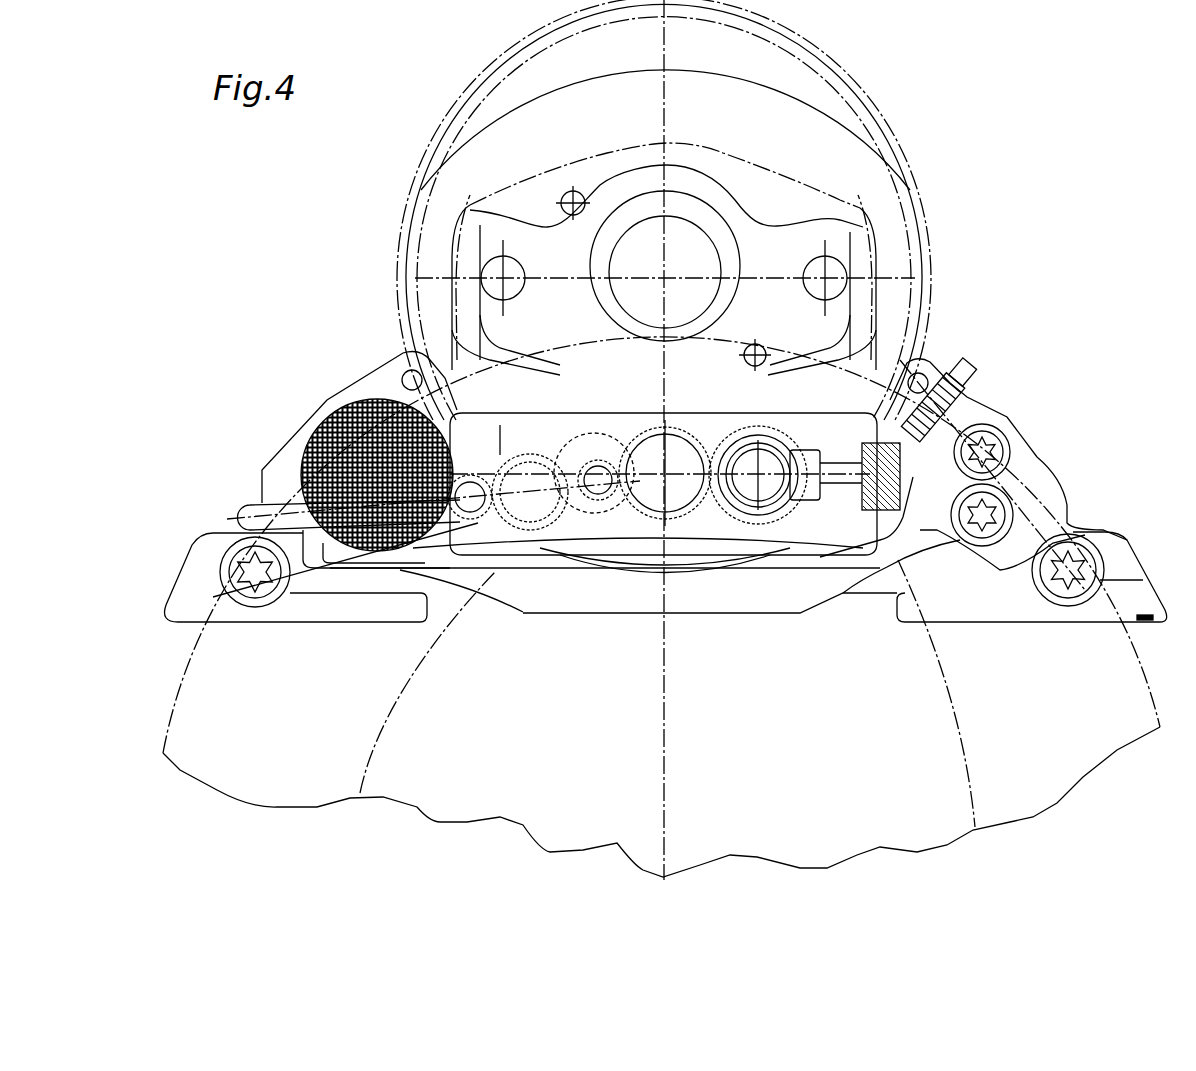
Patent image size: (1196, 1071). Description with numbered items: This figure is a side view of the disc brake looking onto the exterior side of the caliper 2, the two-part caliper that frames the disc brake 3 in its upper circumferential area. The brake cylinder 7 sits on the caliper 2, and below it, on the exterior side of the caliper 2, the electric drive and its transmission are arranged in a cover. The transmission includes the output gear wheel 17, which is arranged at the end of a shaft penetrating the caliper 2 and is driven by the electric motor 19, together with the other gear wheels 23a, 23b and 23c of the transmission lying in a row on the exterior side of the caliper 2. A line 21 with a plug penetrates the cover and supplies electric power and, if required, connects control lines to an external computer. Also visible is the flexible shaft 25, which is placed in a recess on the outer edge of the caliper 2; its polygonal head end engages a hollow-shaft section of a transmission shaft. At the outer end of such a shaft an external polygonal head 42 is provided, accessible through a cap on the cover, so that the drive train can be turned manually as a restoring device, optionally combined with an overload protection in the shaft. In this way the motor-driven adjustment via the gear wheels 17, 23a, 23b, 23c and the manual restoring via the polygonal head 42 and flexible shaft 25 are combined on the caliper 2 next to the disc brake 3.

The caliper 2 is at (1040, 463).
The disc brake 3 is at (1133, 680).
The brake cylinder 7 is at (920, 206).
The output gear wheel 17 is at (673, 488).
The electric motor 19 is at (782, 472).
The line 21 is at (957, 365).
The gear wheel 23a is at (598, 505).
The gear wheel 23b is at (530, 524).
The gear wheel 23c is at (478, 522).
The flexible shaft 25 is at (235, 515).
The external polygonal head 42 is at (332, 413).